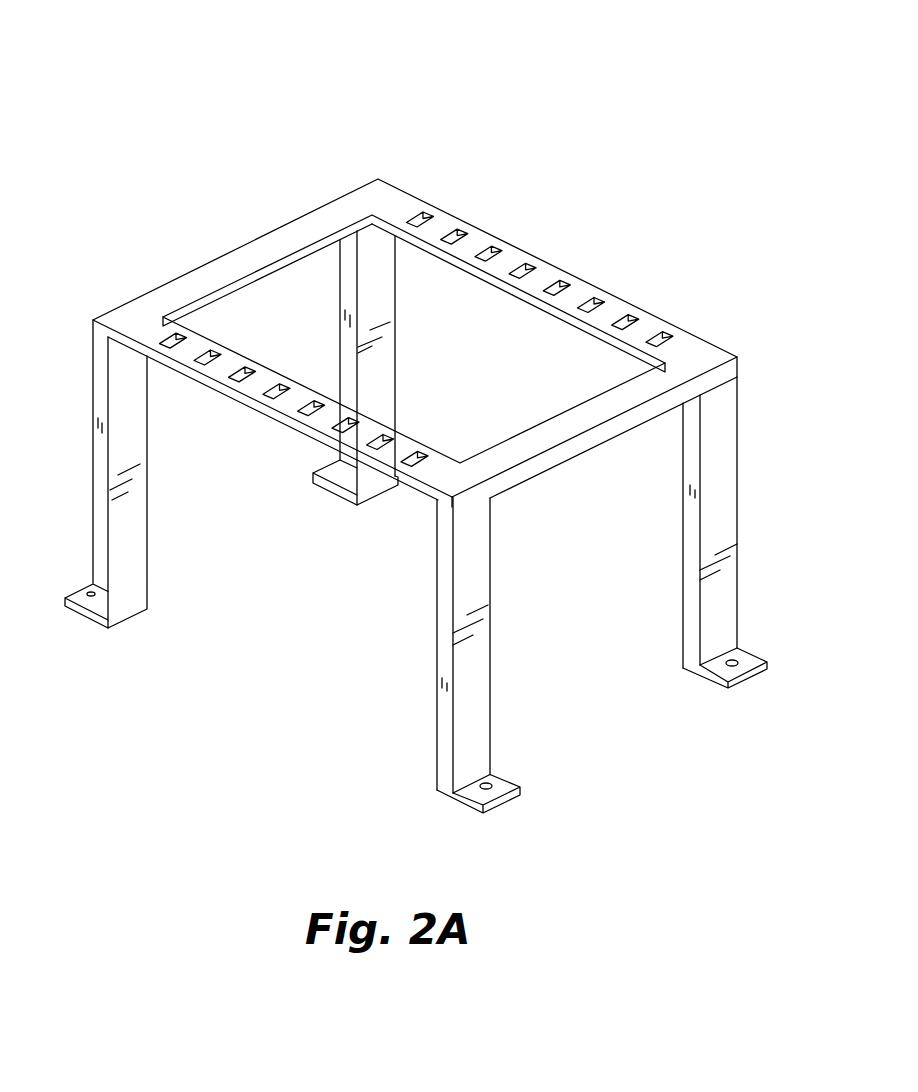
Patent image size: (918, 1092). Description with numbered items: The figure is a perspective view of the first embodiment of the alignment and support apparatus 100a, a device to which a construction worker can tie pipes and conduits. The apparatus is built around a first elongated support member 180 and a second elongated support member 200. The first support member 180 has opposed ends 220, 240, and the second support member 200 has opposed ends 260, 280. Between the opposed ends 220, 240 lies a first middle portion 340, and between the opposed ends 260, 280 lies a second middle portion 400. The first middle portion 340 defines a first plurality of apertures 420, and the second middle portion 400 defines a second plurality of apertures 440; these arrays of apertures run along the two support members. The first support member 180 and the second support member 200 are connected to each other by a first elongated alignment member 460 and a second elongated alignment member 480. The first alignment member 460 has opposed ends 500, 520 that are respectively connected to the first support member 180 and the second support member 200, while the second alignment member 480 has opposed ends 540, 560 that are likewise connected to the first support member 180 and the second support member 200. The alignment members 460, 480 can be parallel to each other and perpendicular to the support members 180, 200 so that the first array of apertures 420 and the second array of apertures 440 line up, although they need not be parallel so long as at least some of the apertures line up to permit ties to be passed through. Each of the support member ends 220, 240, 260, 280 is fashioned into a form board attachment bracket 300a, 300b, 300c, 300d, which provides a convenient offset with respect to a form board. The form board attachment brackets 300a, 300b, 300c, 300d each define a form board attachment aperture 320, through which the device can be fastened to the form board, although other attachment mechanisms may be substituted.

The alignment and support apparatus 100a is at (148, 68).
The first elongated support member 180 is at (558, 240).
The second elongated support member 200 is at (262, 418).
The opposed end 220 is at (417, 190).
The opposed end 240 is at (703, 345).
The opposed end 260 is at (118, 317).
The opposed end 280 is at (456, 482).
The form board attachment bracket 300a is at (380, 297).
The form board attachment bracket 300b is at (735, 512).
The form board attachment bracket 300c is at (482, 655).
The form board attachment bracket 300d is at (112, 468).
The form board attachment aperture 320 is at (493, 773).
The first middle portion 340 is at (490, 233).
The second middle portion 400 is at (295, 452).
The first plurality of apertures 420 is at (593, 290).
The second plurality of apertures 440 is at (422, 464).
The first elongated alignment member 460 is at (267, 232).
The second elongated alignment member 480 is at (595, 412).
The opposed end 500 is at (340, 203).
The opposed end 520 is at (173, 287).
The opposed end 540 is at (700, 363).
The opposed end 560 is at (480, 460).